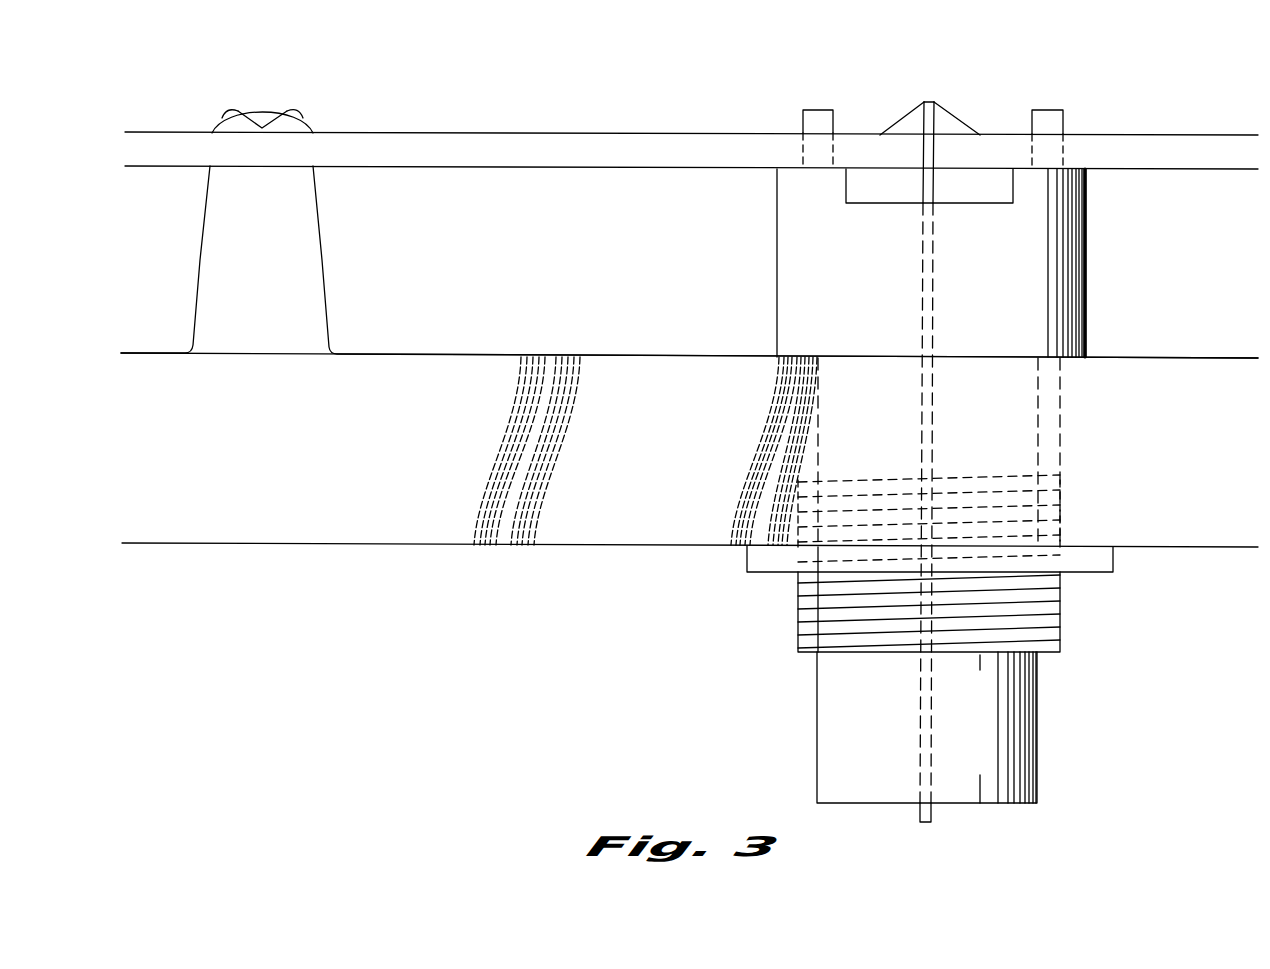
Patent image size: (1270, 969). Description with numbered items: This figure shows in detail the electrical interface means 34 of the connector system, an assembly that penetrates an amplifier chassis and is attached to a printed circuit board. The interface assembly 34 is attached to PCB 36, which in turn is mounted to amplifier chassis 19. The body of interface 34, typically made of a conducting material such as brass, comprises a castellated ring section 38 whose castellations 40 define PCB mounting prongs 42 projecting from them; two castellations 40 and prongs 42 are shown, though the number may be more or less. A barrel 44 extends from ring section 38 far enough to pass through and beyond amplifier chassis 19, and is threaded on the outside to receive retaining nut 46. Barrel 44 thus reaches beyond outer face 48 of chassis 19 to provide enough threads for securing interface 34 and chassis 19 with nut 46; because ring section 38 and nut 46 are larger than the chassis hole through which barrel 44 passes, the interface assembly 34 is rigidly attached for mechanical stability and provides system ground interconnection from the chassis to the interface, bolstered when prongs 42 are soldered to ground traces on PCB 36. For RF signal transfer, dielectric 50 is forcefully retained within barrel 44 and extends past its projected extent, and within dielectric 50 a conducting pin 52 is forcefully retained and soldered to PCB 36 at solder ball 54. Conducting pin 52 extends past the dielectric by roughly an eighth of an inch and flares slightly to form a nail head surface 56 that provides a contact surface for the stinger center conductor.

The amplifier chassis 19 is at (422, 505).
The electrical interface means 34 is at (767, 607).
The PCB 36 is at (562, 157).
The castellated ring section 38 is at (1103, 295).
The castellations 40 is at (793, 208).
The PCB mounting prongs 42 is at (808, 120).
The barrel 44 is at (1062, 418).
The retaining nut 46 is at (1105, 560).
The outer face 48 is at (575, 546).
The dielectric 50 is at (1020, 708).
The conducting pin 52 is at (927, 100).
The solder ball 54 is at (948, 128).
The nail head surface 56 is at (928, 818).